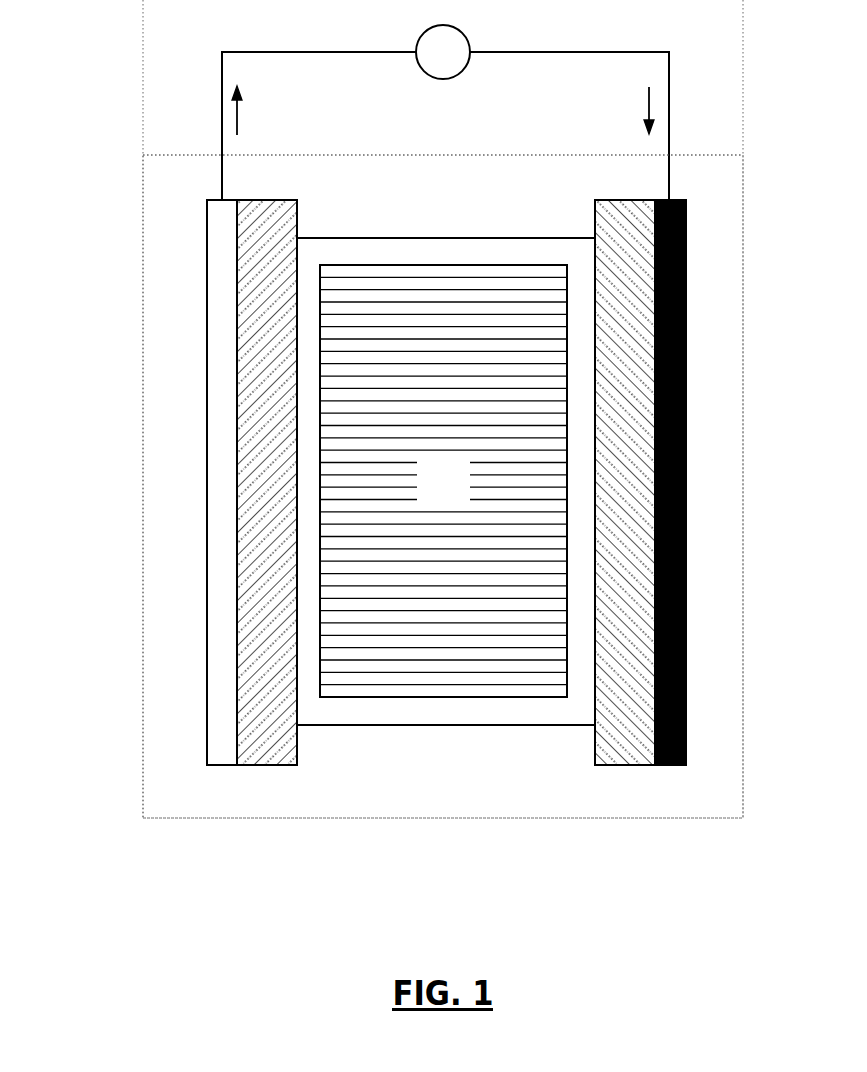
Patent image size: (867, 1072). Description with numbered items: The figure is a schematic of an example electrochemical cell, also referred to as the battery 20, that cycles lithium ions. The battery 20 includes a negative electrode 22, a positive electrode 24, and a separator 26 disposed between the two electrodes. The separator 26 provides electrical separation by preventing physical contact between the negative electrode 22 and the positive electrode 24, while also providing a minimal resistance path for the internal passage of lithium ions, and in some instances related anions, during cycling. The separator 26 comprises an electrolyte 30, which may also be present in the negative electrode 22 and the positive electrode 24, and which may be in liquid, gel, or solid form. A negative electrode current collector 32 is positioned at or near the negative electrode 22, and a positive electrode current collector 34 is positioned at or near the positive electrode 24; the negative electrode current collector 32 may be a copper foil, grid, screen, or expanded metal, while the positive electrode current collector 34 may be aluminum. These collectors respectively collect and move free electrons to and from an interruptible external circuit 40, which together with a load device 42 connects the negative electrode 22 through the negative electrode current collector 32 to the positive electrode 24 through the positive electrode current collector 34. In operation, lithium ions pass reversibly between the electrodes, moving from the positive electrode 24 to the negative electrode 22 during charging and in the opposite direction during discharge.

The electrochemical cell 20 is at (132, 233).
The negative electrode 22 is at (627, 765).
The positive electrode 24 is at (263, 765).
The separator 26 is at (443, 725).
The electrolyte 30 is at (443, 481).
The negative electrode current collector 32 is at (686, 482).
The positive electrode current collector 34 is at (207, 483).
The external circuit 40 is at (133, 70).
The load device 42 is at (443, 52).